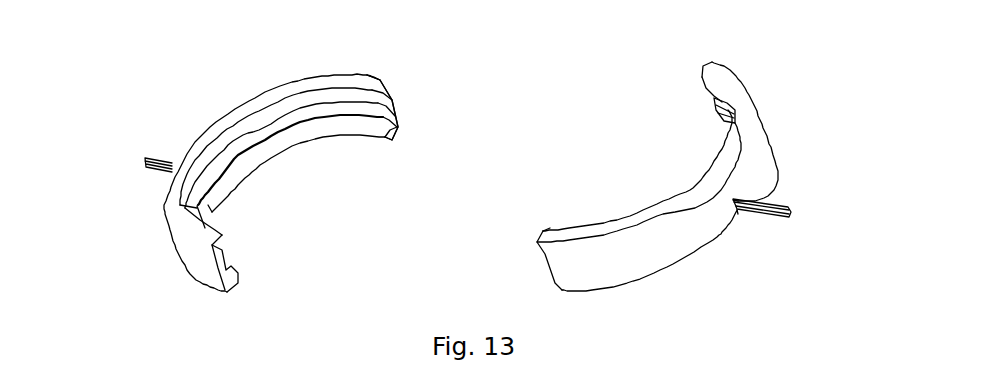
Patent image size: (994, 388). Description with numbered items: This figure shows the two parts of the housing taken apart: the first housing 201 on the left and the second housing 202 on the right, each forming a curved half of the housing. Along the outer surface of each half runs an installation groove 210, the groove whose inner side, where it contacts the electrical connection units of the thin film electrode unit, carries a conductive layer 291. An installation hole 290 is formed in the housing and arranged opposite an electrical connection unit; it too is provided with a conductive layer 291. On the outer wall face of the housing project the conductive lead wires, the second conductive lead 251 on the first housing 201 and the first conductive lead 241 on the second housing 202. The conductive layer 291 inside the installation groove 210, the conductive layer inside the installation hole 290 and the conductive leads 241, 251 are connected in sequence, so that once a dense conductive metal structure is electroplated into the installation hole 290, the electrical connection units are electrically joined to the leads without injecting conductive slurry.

The first housing 201 is at (357, 82).
The second housing 202 is at (762, 137).
The installation groove 210 is at (387, 110).
The first conductive lead 241 is at (789, 207).
The second conductive lead 251 is at (150, 160).
The installation hole 290 is at (207, 168).
The conductive layer 291 is at (208, 205).